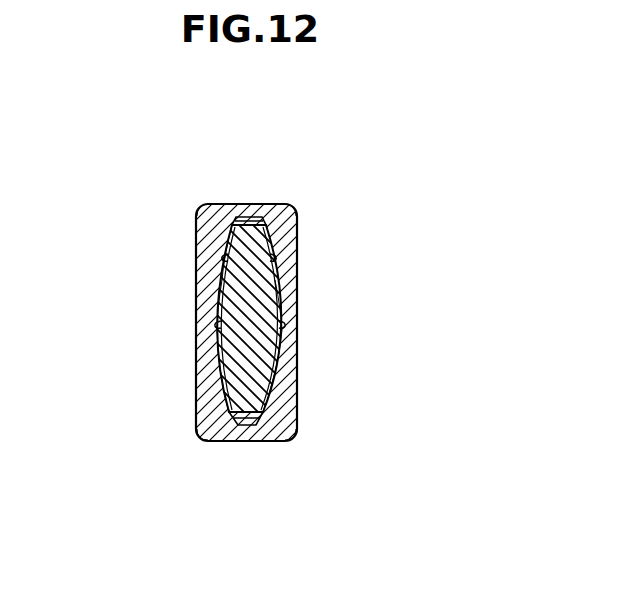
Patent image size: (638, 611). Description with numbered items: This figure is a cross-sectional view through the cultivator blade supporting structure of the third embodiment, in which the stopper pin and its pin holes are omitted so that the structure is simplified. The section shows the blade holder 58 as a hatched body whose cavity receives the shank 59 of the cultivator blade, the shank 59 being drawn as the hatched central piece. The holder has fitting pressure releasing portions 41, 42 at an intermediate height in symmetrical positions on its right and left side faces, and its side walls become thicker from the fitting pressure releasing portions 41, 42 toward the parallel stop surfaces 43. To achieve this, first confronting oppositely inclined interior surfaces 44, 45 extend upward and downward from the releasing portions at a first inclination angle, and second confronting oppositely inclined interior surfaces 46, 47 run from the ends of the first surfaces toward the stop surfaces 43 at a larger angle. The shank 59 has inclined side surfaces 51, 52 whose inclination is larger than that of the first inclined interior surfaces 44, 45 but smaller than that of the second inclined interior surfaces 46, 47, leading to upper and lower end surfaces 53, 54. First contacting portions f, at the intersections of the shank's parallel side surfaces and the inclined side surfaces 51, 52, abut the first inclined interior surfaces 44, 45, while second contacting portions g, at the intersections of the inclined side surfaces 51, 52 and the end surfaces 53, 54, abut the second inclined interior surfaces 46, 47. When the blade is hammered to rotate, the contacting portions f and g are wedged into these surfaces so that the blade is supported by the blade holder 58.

The fitting pressure releasing portion 41 is at (217, 326).
The fitting pressure releasing portion 42 is at (284, 330).
The stop surface 43 is at (248, 323).
The first inclined interior surface 44 is at (222, 378).
The first inclined interior surface 45 is at (272, 383).
The second inclined interior surface 46 is at (228, 398).
The second inclined interior surface 47 is at (268, 414).
The inclined side surface 51 is at (226, 260).
The inclined side surface 52 is at (295, 232).
The upper end surface 53 is at (252, 218).
The lower end surface 54 is at (251, 425).
The blade holder 58 is at (248, 325).
The shank 59 is at (257, 280).
The first contacting portion f is at (222, 300).
The second contacting portion g is at (214, 206).